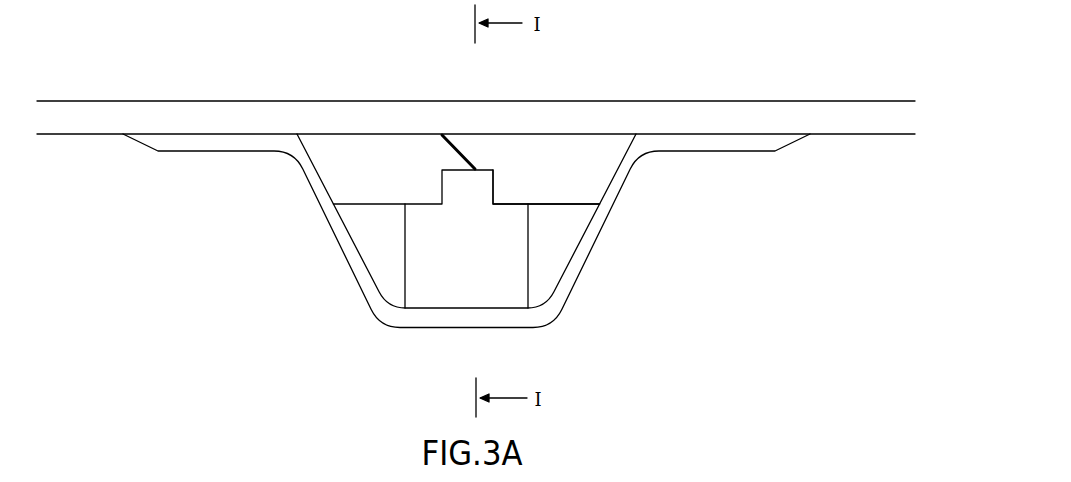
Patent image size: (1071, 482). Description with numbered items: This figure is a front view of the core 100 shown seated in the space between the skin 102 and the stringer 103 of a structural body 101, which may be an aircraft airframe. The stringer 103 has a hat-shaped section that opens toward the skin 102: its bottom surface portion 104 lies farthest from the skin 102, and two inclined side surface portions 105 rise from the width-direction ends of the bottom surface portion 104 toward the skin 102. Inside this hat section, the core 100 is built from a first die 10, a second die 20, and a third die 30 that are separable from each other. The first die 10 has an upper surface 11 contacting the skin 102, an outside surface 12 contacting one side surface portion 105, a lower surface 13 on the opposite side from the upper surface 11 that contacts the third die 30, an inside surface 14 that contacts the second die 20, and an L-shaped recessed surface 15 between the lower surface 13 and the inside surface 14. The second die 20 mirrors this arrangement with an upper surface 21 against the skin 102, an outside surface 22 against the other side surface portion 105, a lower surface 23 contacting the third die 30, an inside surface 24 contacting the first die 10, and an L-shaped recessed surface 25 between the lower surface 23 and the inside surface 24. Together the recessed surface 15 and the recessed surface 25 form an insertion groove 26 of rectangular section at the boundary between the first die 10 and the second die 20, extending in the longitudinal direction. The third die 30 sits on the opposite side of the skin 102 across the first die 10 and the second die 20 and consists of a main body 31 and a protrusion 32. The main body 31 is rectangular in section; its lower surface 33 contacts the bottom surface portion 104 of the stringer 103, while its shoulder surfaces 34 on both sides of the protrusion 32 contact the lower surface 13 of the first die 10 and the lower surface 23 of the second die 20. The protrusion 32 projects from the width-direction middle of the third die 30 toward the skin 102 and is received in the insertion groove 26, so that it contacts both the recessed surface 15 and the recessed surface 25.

The structural body 101 is at (758, 99).
The skin 102 is at (160, 110).
The core 100 is at (404, 277).
The first die 10 is at (386, 178).
The upper surface 11 is at (345, 134).
The outside surface 12 is at (316, 165).
The lower surface 13 is at (342, 217).
The inside surface 14 is at (463, 162).
The recessed surface 15 is at (408, 249).
The second die 20 is at (566, 178).
The upper surface 21 is at (586, 134).
The outside surface 22 is at (626, 157).
The lower surface 23 is at (598, 217).
The inside surface 24 is at (481, 170).
The recessed surface 25 is at (470, 172).
The insertion groove 26 is at (483, 206).
The third die 30 is at (477, 275).
The main body 31 is at (450, 304).
The protrusion 32 is at (438, 172).
The lower surface 33 is at (414, 312).
The shoulder surfaces 34 is at (424, 198).
The stringer 103 is at (592, 273).
The bottom surface portion 104 is at (528, 324).
The side surface portions 105 is at (347, 258).